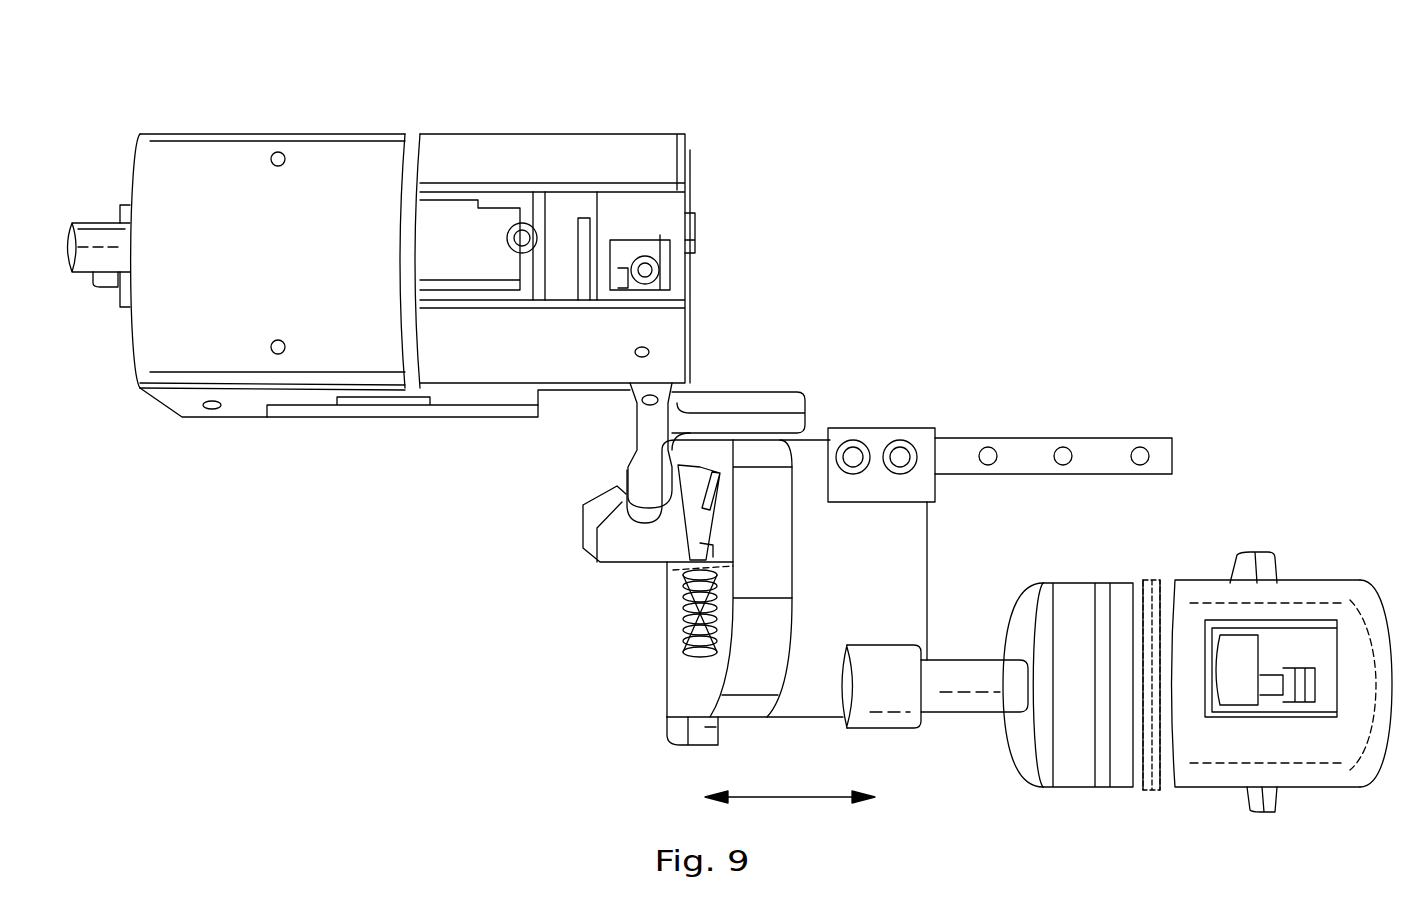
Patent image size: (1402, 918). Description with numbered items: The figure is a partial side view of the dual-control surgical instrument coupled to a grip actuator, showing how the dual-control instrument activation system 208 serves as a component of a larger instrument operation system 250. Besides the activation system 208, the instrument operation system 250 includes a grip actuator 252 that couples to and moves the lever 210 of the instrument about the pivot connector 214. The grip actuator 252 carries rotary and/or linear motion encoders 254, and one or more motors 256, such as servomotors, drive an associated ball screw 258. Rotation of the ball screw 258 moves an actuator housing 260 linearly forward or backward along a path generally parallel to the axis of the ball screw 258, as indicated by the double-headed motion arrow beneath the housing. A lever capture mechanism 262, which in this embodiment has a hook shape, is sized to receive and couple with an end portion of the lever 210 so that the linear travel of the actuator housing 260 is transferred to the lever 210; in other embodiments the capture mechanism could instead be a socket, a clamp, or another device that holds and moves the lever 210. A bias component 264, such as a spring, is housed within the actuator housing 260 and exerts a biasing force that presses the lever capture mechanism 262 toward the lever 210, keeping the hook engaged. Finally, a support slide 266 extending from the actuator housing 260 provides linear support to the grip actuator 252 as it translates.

The dual-control instrument activation system 208 is at (229, 122).
The lever 210 is at (630, 468).
The pivot connector 214 is at (634, 352).
The instrument operation system 250 is at (1096, 96).
The grip actuator 252 is at (658, 679).
The rotary and/or linear motion encoders 254 is at (1370, 760).
The motors 256 is at (1072, 790).
The ball screw 258 is at (958, 718).
The actuator housing 260 is at (905, 558).
The lever capture mechanism 262 is at (583, 526).
The bias component 264 is at (672, 600).
The support slide 266 is at (1118, 437).